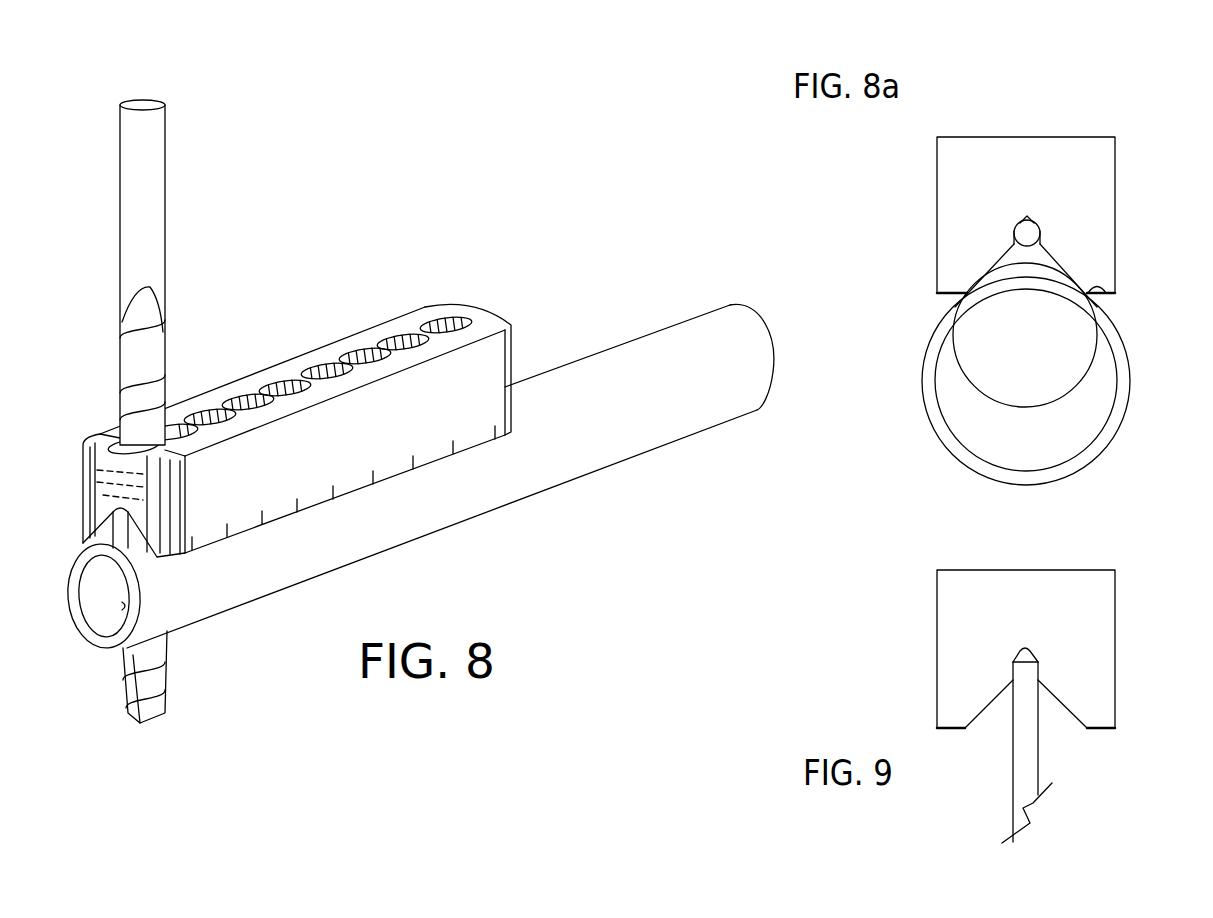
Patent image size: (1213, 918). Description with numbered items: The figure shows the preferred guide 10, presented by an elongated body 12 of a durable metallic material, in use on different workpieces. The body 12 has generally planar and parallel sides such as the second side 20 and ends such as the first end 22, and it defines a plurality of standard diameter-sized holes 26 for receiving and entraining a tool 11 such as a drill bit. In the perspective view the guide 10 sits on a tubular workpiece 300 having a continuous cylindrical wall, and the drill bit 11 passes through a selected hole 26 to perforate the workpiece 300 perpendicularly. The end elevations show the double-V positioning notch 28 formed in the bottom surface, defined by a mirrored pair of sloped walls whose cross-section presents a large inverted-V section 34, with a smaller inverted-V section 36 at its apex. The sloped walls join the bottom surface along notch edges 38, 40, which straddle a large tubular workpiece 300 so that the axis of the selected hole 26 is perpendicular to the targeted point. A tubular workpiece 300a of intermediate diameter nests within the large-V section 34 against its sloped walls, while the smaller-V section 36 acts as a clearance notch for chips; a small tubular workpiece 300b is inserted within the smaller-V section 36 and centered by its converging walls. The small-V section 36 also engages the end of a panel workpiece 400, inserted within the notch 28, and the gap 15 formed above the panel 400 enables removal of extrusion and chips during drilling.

In FIG. 8, the guide 10 is at (527, 203).
In FIG. 8, the tool 11 is at (157, 178).
In FIG. 8, the elongated body 12 is at (512, 312).
In FIG. 8, the second side 20 is at (408, 430).
In FIG. 8A, the first end 22 is at (1094, 175).
In FIG. 9, the first end 22 is at (1096, 608).
In FIG. 8, the standard diameter-sized holes 26 is at (235, 398).
In FIG. 8A, the double-V positioning notch 28 is at (975, 230).
In FIG. 8A, the large inverted-V section 34 is at (975, 272).
In FIG. 8A, the smaller inverted-V section 36 is at (1027, 205).
In FIG. 8A, the notch edge 38 is at (967, 290).
In FIG. 8A, the notch edge 40 is at (1100, 290).
In FIG. 8, the tubular workpiece 300 is at (660, 408).
In FIG. 8A, the tubular workpiece 300 is at (928, 362).
In FIG. 8A, the tubular workpiece 300a is at (1080, 377).
In FIG. 8A, the tubular workpiece 300b is at (1037, 230).
In FIG. 9, the gap 15 is at (1035, 653).
In FIG. 9, the panel workpiece 400 is at (1040, 763).